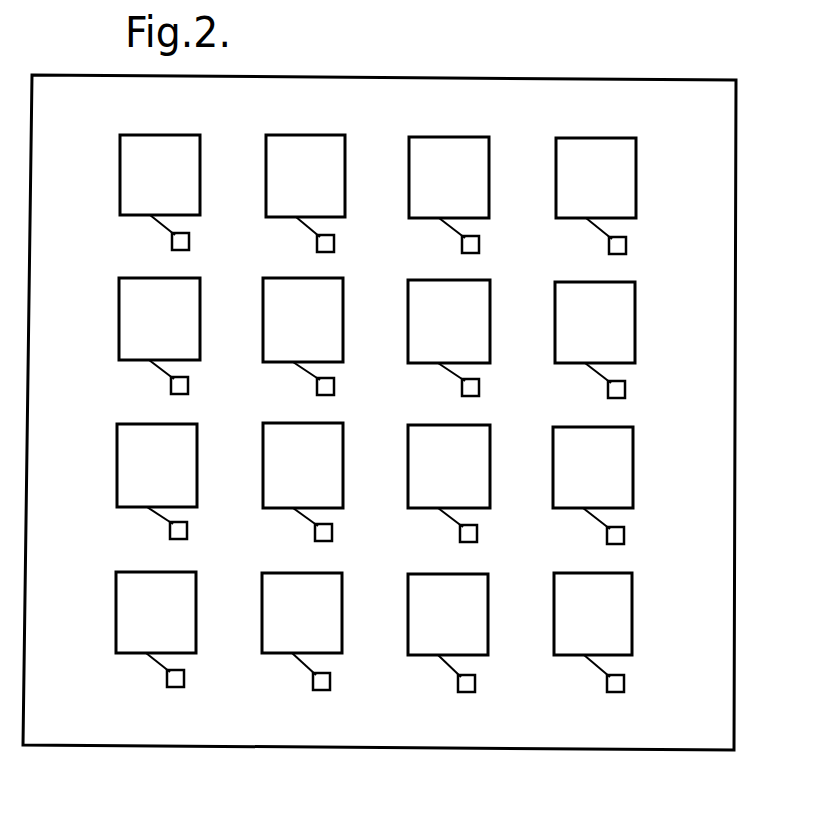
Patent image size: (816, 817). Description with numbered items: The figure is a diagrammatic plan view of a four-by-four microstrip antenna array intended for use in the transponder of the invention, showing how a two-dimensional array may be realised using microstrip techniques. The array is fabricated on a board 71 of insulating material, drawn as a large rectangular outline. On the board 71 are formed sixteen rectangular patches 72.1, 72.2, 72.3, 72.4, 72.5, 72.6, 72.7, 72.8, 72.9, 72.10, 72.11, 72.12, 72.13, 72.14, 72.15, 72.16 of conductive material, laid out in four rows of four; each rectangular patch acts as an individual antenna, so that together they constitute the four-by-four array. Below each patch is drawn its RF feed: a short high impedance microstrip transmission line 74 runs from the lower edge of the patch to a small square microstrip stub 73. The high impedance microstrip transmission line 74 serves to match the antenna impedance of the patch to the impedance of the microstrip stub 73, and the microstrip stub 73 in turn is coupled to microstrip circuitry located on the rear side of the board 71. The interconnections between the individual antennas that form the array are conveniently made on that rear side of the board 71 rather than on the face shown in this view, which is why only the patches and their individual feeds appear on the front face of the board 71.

The board 71 is at (647, 76).
The rectangular patch 72.1 is at (134, 188).
The rectangular patch 72.2 is at (279, 188).
The rectangular patch 72.3 is at (423, 190).
The rectangular patch 72.4 is at (570, 191).
The rectangular patch 72.5 is at (133, 332).
The rectangular patch 72.6 is at (277, 332).
The rectangular patch 72.7 is at (423, 334).
The rectangular patch 72.8 is at (569, 335).
The rectangular patch 72.9 is at (131, 478).
The rectangular patch 72.10 is at (269, 477).
The rectangular patch 72.11 is at (415, 479).
The rectangular patch 72.12 is at (559, 480).
The rectangular patch 72.13 is at (122, 625).
The rectangular patch 72.14 is at (268, 626).
The rectangular patch 72.15 is at (414, 627).
The rectangular patch 72.16 is at (559, 626).
The microstrip stub 73 is at (189, 241).
The high impedance microstrip transmission line 74 is at (590, 222).